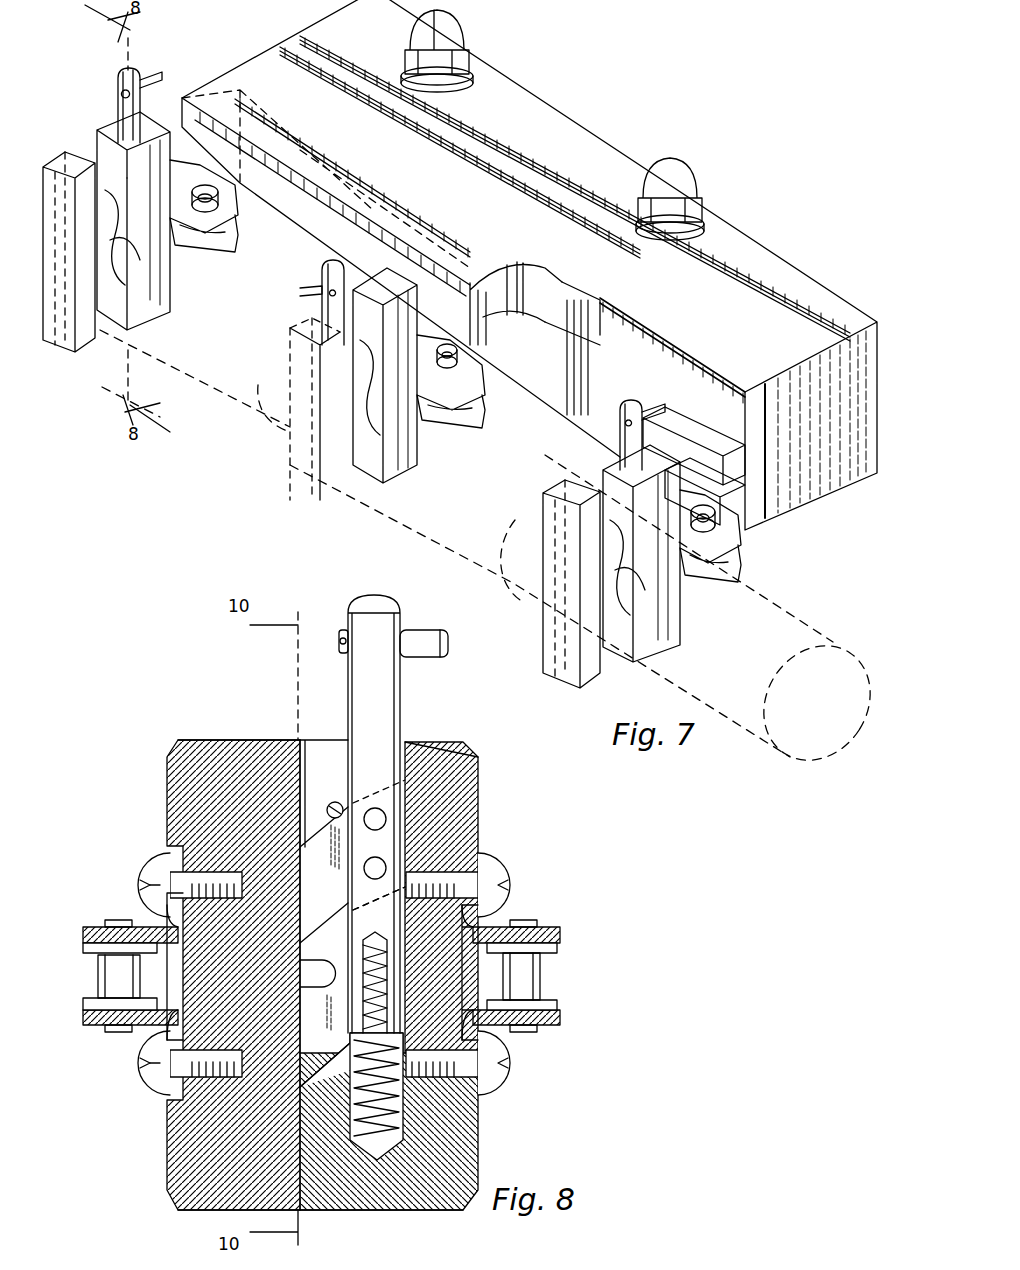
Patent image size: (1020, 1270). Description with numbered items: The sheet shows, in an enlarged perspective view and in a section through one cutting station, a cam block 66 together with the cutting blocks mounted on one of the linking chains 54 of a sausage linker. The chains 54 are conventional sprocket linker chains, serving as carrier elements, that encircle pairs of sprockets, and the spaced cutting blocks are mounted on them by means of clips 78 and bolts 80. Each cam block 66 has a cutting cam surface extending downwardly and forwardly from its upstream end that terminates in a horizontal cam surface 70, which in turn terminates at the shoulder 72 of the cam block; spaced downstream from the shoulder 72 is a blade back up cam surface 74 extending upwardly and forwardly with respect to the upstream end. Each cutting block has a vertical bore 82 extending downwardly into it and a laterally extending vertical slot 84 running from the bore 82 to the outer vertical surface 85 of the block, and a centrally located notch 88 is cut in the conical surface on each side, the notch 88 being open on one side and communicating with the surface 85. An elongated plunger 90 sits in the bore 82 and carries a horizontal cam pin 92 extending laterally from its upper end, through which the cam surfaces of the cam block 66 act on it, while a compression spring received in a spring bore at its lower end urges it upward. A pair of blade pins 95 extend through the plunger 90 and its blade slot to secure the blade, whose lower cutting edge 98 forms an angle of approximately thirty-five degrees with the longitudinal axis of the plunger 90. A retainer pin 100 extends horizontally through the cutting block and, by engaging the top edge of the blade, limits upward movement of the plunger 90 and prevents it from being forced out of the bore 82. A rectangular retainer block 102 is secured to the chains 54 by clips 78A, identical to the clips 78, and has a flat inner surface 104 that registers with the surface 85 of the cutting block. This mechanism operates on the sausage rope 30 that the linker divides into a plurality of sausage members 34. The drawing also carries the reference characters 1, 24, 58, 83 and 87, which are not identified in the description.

In FIG. 7, the apparatus 1 is at (605, 106).
In FIG. 7, the bar 24 is at (606, 95).
In FIG. 7, the sausage rope 30 is at (752, 572).
In FIG. 7, the sausage members 34 is at (222, 385).
In FIG. 7, the sprocket linker chains 54 is at (740, 565).
In FIG. 8, the sprocket linker chains 54 is at (560, 925).
In FIG. 7, the roller 58 is at (725, 545).
In FIG. 8, the roller 58 is at (575, 940).
In FIG. 7, the cam block 66 is at (735, 205).
In FIG. 7, the horizontal cam surface 70 is at (430, 300).
In FIG. 7, the shoulder 72 is at (500, 290).
In FIG. 7, the blade back up cam surface 74 is at (690, 395).
In FIG. 7, the clips 78 is at (110, 125).
In FIG. 8, the clips 78 is at (540, 990).
In FIG. 8, the clips 78A is at (97, 852).
In FIG. 8, the bolts 80 is at (152, 862).
In FIG. 7, the vertical bore 82 is at (155, 73).
In FIG. 8, the vertical bore 82 is at (380, 735).
In FIG. 8, the hidden pin hole 83 is at (505, 898).
In FIG. 7, the vertical slot 84 is at (470, 50).
In FIG. 8, the vertical slot 84 is at (330, 760).
In FIG. 7, the outer vertical surface 85 is at (130, 300).
In FIG. 8, the outer vertical surface 85 is at (225, 1210).
In FIG. 8, the bore 87 is at (305, 760).
In FIG. 7, the notch 88 is at (255, 170).
In FIG. 8, the notch 88 is at (500, 1052).
In FIG. 7, the plunger 90 is at (118, 85).
In FIG. 8, the plunger 90 is at (380, 710).
In FIG. 7, the cam pin 92 is at (665, 400).
In FIG. 8, the cam pin 92 is at (425, 657).
In FIG. 8, the blade pins 95 is at (478, 815).
In FIG. 8, the lower cutting edge 98 is at (178, 760).
In FIG. 8, the retainer pin 100 is at (300, 740).
In FIG. 7, the retainer block 102 is at (97, 350).
In FIG. 8, the retainer block 102 is at (160, 745).
In FIG. 7, the flat inner surface 104 is at (115, 325).
In FIG. 8, the flat inner surface 104 is at (330, 1210).